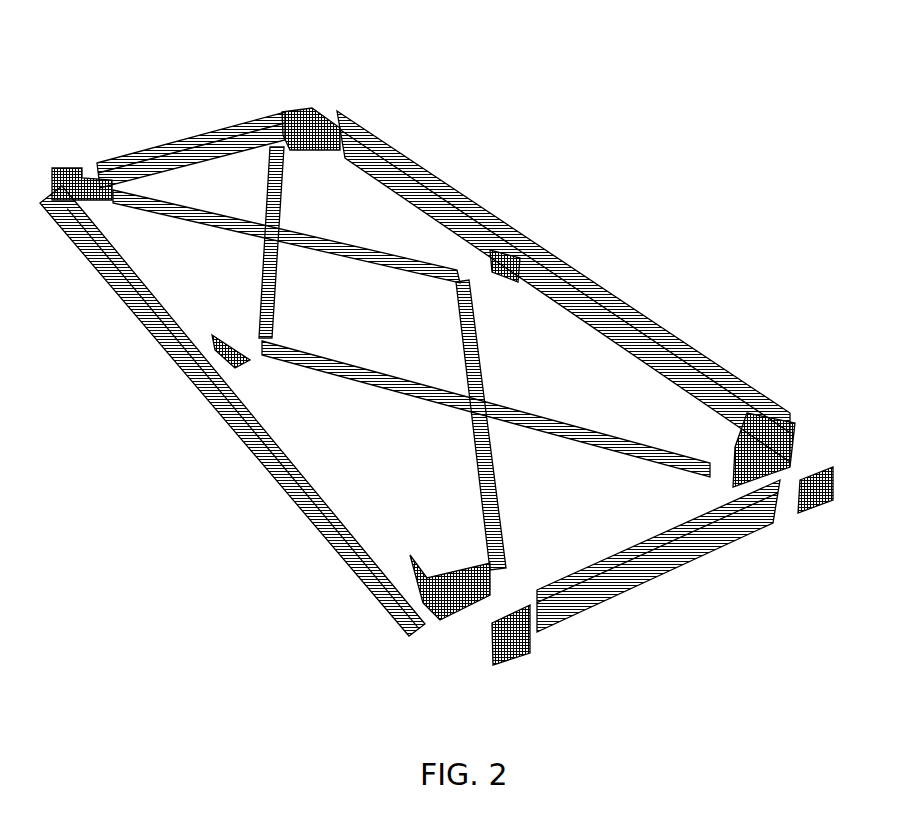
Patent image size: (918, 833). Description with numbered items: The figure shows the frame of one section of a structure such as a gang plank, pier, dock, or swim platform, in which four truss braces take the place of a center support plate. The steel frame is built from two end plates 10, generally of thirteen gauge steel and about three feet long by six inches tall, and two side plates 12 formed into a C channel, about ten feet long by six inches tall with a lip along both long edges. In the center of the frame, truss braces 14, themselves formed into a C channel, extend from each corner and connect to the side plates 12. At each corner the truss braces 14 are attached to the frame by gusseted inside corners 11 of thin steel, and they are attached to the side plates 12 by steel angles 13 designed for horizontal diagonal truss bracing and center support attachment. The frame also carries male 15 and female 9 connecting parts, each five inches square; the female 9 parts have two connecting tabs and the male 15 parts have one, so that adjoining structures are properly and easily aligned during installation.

The female connecting part 9 is at (60, 163).
The end plate 10 is at (191, 107).
The gusseted inside corner 11 is at (355, 79).
The side plate 12 is at (563, 270).
The steel angle 13 is at (530, 201).
The truss brace 14 is at (537, 389).
The male connecting part 15 is at (783, 424).